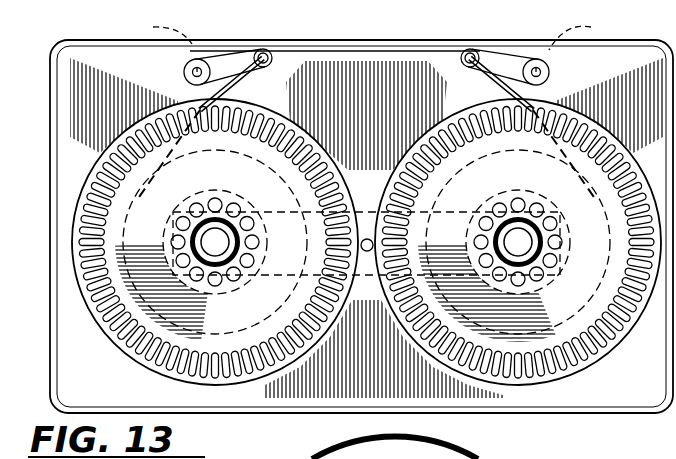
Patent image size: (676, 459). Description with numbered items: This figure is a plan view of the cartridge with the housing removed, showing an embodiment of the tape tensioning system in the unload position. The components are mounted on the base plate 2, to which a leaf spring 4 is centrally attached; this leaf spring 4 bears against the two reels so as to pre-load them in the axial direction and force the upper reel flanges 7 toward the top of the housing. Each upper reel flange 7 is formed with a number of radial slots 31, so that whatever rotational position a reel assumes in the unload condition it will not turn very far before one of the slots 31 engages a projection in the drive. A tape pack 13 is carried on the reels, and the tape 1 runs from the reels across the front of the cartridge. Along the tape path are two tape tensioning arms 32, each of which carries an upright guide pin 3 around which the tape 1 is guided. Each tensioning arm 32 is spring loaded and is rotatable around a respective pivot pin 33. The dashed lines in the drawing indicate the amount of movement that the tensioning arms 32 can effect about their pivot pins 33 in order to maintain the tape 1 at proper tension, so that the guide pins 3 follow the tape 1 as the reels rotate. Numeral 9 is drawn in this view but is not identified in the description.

The tape 1 is at (332, 51).
The base plate 2 is at (591, 397).
The guide pin 3 is at (275, 62).
The leaf spring 4 is at (375, 240).
The upper reel flange 7 is at (126, 356).
The hub bolts 9 is at (217, 204).
The tape pack 13 is at (234, 175).
The radial slots 31 is at (232, 387).
The tension arm 32 is at (228, 56).
The pivot pin 33 is at (375, 32).